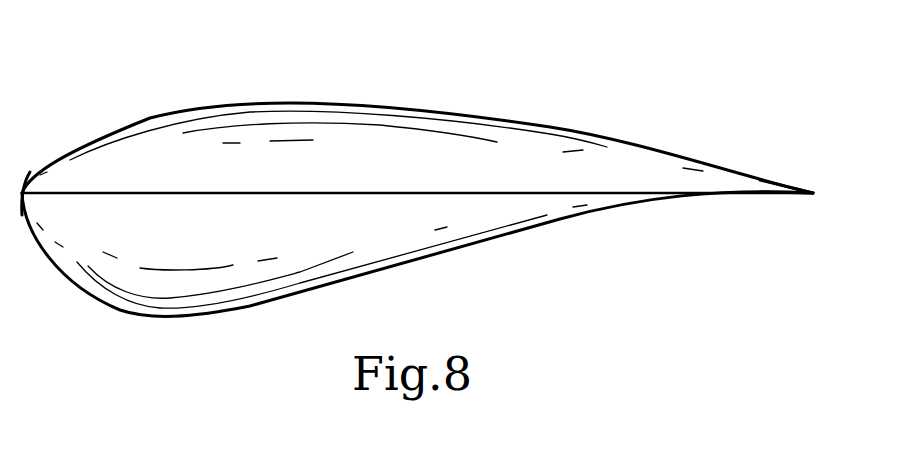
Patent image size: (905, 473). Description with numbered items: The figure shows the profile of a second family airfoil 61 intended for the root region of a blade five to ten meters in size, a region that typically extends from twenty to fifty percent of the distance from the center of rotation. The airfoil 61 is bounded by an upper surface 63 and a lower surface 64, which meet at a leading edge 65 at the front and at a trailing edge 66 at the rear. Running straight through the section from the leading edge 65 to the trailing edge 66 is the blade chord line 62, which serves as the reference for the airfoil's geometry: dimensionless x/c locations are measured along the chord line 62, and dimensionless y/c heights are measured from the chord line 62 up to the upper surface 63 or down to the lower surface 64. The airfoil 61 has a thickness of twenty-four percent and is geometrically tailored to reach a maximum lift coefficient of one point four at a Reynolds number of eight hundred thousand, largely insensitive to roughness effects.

The second family airfoil 61 is at (429, 212).
The chord line 62 is at (148, 193).
The upper surface 63 is at (277, 105).
The lower surface 64 is at (153, 320).
The leading edge 65 is at (22, 190).
The trailing edge 66 is at (747, 170).